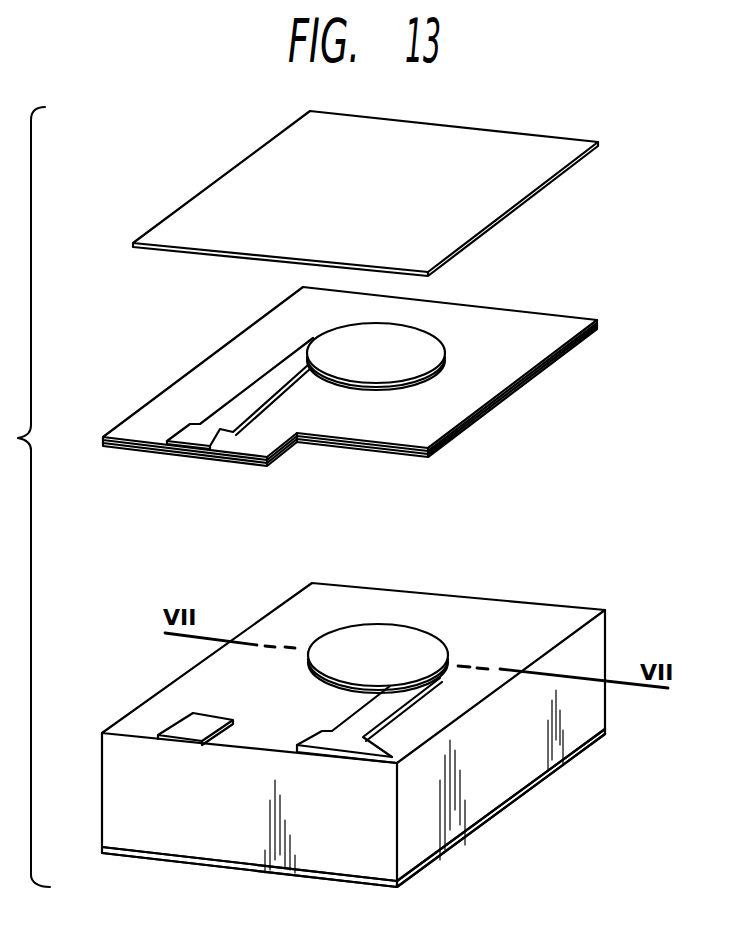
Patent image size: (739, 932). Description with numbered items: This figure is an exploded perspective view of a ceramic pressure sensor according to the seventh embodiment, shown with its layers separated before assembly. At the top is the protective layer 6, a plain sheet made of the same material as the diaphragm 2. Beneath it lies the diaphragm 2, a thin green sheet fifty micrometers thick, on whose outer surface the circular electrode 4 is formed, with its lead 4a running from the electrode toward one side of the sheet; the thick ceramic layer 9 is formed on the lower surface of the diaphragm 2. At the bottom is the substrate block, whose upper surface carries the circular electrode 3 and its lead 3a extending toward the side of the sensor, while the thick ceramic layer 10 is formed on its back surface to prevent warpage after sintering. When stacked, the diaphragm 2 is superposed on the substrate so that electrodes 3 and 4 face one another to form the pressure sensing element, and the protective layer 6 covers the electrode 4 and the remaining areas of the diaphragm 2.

The protective layer 6 is at (549, 177).
The diaphragm 2 is at (448, 432).
The circular electrode 4 is at (447, 353).
The lead 4a is at (192, 420).
The thick ceramic layer 9 is at (350, 395).
The circular electrode 3 is at (385, 632).
The lead 3a is at (365, 741).
The thick ceramic layer 10 is at (560, 763).